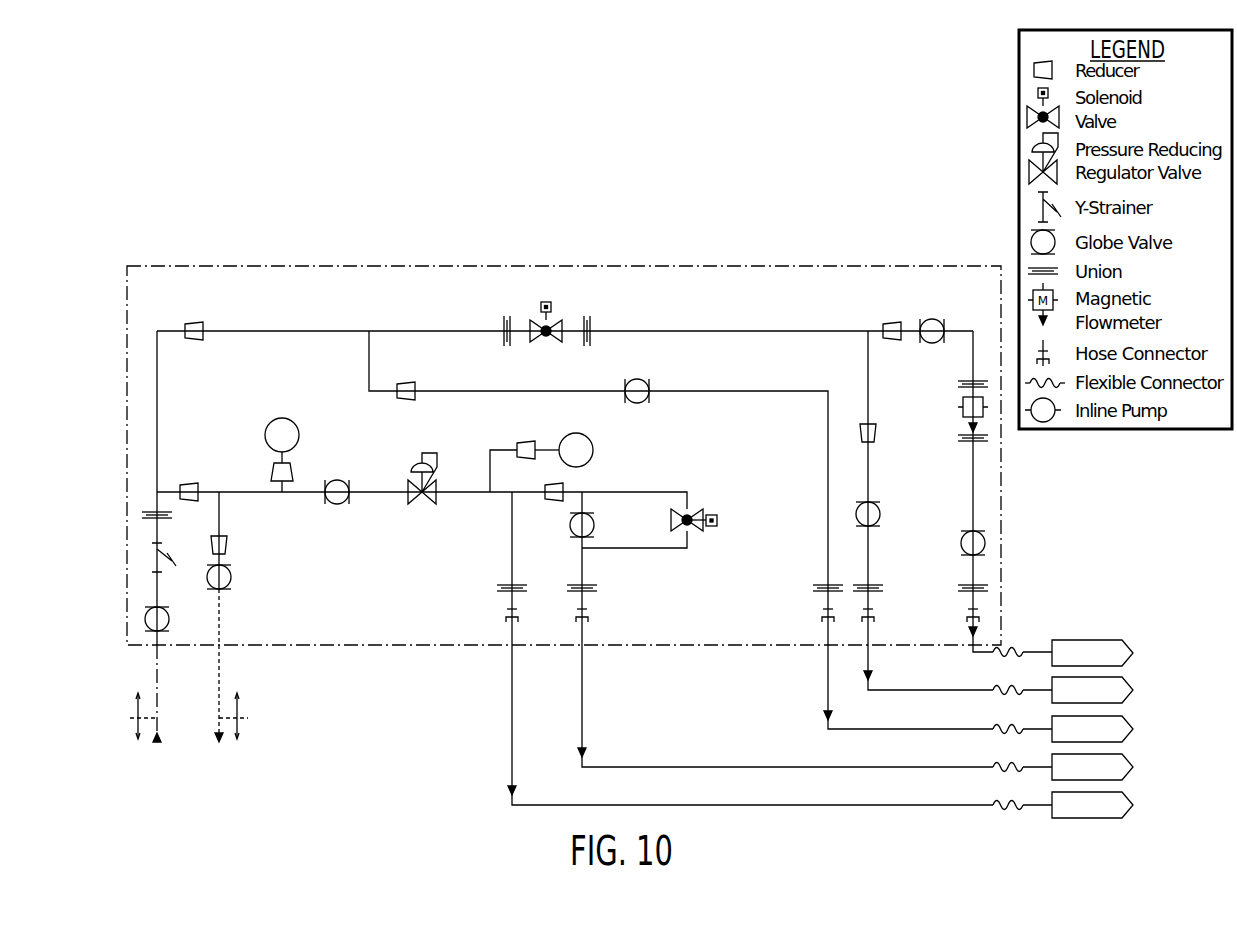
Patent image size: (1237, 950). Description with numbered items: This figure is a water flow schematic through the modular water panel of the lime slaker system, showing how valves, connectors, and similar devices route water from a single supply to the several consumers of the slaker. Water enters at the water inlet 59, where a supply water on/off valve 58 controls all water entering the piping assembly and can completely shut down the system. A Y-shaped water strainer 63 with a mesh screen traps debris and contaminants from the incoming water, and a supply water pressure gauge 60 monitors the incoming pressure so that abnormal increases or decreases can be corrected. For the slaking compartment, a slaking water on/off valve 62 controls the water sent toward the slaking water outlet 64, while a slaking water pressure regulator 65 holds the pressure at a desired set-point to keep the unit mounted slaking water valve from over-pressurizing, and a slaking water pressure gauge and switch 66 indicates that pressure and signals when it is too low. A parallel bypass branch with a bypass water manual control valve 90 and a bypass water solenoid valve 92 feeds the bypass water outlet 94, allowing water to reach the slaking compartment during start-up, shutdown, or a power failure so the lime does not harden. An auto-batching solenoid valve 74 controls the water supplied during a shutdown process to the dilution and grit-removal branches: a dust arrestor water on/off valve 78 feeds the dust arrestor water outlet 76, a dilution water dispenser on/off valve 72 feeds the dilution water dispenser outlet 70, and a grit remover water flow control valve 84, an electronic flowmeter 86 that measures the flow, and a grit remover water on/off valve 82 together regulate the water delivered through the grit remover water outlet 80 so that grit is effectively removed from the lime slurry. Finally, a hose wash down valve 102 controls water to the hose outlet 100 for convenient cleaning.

The supply water on/off valve 58 is at (145, 619).
The water inlet 59 is at (157, 732).
The supply water pressure gauge 60 is at (282, 418).
The slaking water on/off valve 62 is at (337, 479).
The water strainer 63 is at (165, 553).
The slaking water outlet 64 is at (1092, 805).
The slaking water pressure regulator 65 is at (422, 470).
The slaking water pressure gauge and switch 66 is at (576, 433).
The dilution water dispenser outlet 70 is at (1092, 690).
The dilution water dispenser on/off valve 72 is at (880, 512).
The auto-batching solenoid valve 74 is at (546, 302).
The dust arrestor water outlet 76 is at (1092, 729).
The dust arrestor water on/off valve 78 is at (637, 379).
The grit remover water outlet 80 is at (1092, 653).
The grit remover water on/off valve 82 is at (985, 545).
The grit remover water flow control valve 84 is at (932, 319).
The electronic flowmeter 86 is at (980, 418).
The bypass water manual control valve 90 is at (570, 525).
The bypass water solenoid valve 92 is at (687, 508).
The bypass water outlet 94 is at (1092, 767).
The hose outlet 100 is at (219, 735).
The hose wash down valve 102 is at (232, 577).